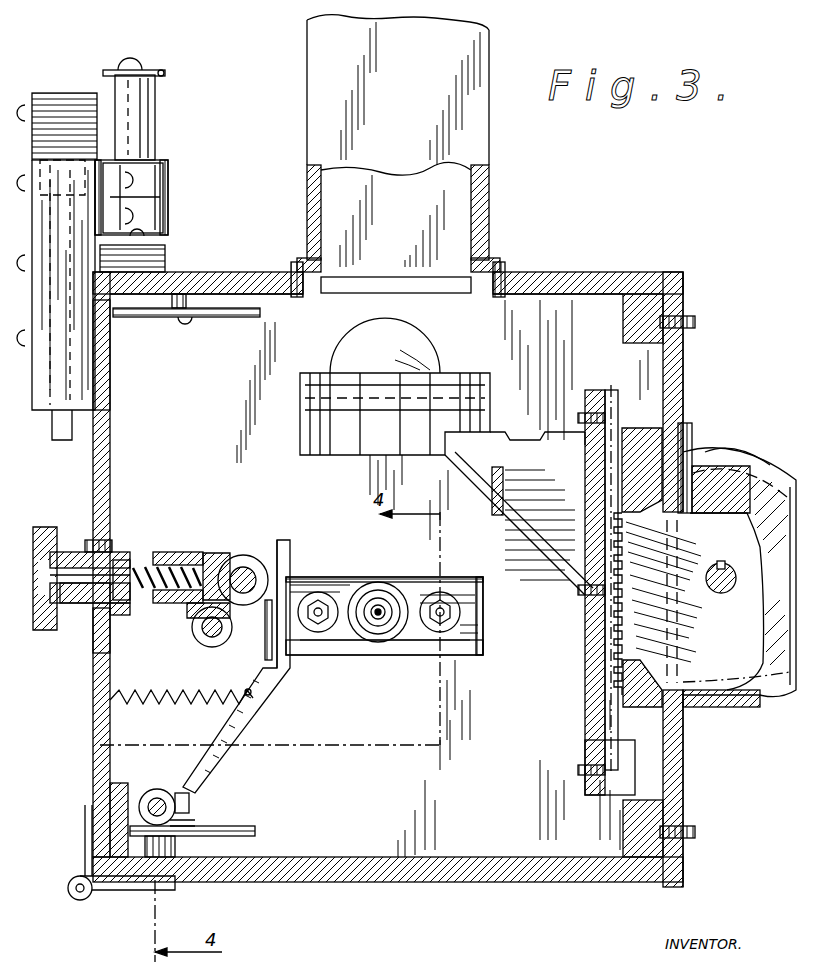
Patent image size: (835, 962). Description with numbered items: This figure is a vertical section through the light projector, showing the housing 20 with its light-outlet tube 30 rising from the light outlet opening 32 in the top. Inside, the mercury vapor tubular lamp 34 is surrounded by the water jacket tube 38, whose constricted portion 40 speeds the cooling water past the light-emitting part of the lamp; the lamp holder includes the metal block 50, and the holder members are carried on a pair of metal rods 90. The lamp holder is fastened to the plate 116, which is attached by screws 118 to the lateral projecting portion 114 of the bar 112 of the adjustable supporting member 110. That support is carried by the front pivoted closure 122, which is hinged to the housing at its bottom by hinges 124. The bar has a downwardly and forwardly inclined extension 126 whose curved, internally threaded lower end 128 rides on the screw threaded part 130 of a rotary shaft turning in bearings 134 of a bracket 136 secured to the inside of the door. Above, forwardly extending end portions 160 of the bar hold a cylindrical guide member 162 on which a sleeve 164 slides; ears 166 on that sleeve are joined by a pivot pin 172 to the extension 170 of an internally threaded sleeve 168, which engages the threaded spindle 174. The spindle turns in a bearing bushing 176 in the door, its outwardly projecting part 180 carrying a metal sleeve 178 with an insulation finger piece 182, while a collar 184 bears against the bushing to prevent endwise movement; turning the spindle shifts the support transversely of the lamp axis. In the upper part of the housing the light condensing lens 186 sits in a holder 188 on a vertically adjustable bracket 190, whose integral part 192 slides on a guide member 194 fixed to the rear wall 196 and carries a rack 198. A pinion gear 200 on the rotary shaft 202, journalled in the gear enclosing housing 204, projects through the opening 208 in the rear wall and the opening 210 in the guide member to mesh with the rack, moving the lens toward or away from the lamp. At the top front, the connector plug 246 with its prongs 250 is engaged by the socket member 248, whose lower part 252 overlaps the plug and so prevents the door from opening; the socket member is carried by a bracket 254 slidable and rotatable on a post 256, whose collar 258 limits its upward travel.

The housing 20 is at (622, 270).
The light-outlet tube 30 is at (491, 200).
The light outlet opening 32 is at (445, 283).
The mercury vapor tubular lamp 34 is at (370, 592).
The water jacket tube 38 is at (403, 590).
The constricted portion 40 is at (360, 640).
The metal block 50 is at (478, 657).
The metal rods 90 is at (445, 592).
The adjustable supporting member 110 is at (285, 540).
The bar 112 is at (293, 575).
The lateral projecting portion 114 is at (290, 660).
The plate 116 is at (296, 680).
The screws 118 is at (326, 635).
The front pivoted closure 122 is at (90, 750).
The hinges 124 is at (73, 900).
The extension 126 is at (200, 790).
The lower end 128 is at (150, 790).
The screw threaded part 130 is at (168, 800).
The bearings 134 is at (140, 835).
The bracket 136 is at (108, 805).
The forwardly extending end portions 160 is at (238, 554).
The guide member 162 is at (246, 565).
The sleeve 164 is at (223, 548).
The ears 166 is at (195, 640).
The internally threaded sleeve 168 is at (163, 548).
The extension 170 is at (193, 648).
The pivot pin 172 is at (202, 628).
The spindle 174 is at (138, 550).
The bearing bushing 176 is at (123, 615).
The metal sleeve 178 is at (63, 620).
The outwardly projecting part 180 is at (86, 550).
The insulation finger piece 182 is at (40, 615).
The collar 184 is at (93, 540).
The light condensing lens 186 is at (382, 365).
The holder 188 is at (492, 412).
The vertically adjustable bracket 190 is at (558, 565).
The integral part 192 is at (585, 680).
The guide member 194 is at (610, 372).
The rear wall 196 is at (686, 364).
The rack 198 is at (608, 645).
The pinion gear 200 is at (720, 708).
The rotary shaft 202 is at (722, 593).
The gear enclosing housing 204 is at (758, 468).
The opening 208 is at (708, 475).
The opening 210 is at (620, 465).
The connector plug 246 is at (112, 385).
The socket member 248 is at (43, 105).
The prongs 250 is at (172, 196).
The lower part 252 is at (38, 290).
The bracket 254 is at (170, 175).
The post 256 is at (157, 108).
The collar 258 is at (165, 70).